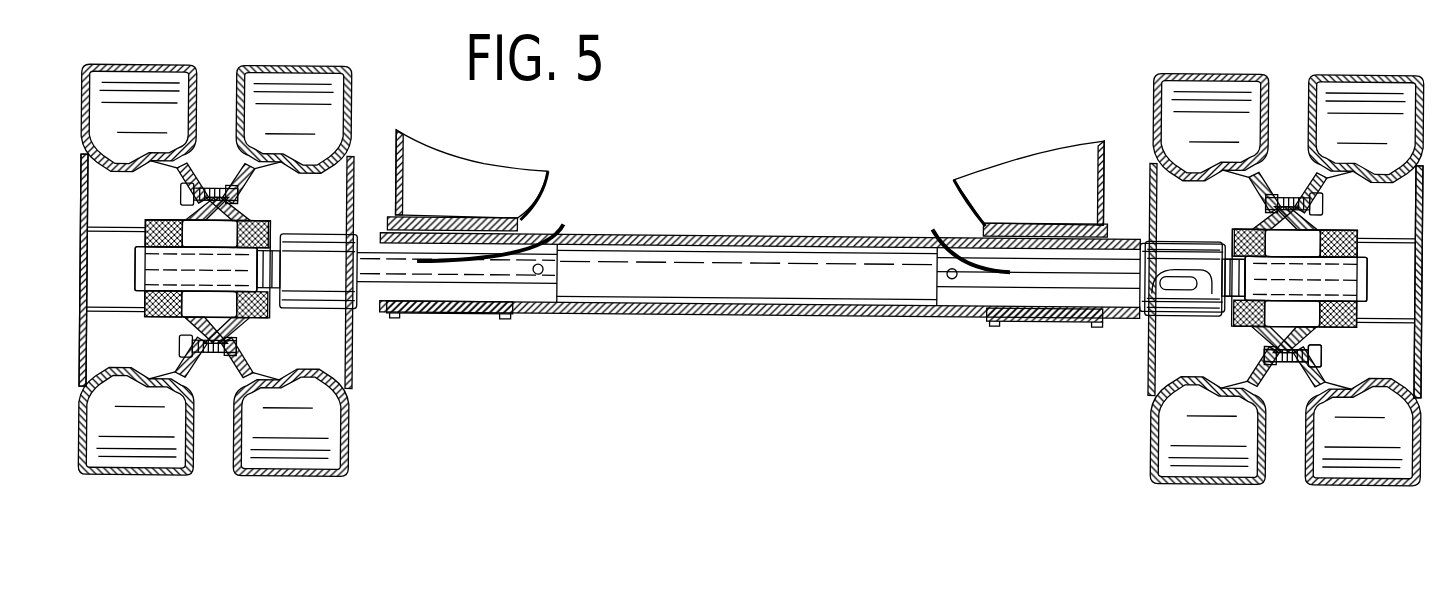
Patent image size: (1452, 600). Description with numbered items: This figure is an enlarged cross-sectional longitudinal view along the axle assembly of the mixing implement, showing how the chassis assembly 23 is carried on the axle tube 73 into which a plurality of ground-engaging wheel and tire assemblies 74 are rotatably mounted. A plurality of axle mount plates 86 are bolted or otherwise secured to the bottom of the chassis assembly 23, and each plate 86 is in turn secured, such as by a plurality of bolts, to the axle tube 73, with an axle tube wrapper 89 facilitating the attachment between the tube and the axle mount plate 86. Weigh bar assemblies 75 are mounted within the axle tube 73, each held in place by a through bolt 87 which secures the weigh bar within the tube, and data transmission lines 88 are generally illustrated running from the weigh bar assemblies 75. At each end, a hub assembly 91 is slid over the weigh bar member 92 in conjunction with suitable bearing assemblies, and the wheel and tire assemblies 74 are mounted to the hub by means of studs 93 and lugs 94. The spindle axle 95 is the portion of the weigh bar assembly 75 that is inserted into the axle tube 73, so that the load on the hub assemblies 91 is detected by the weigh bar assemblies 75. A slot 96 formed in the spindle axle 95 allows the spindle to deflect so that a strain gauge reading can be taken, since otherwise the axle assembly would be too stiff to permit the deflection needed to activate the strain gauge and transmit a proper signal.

The chassis assembly 23 is at (545, 184).
The axle tube 73 is at (752, 306).
The wheel and tire assemblies 74 is at (340, 432).
The weigh bar assemblies 75 is at (355, 222).
The axle mount plates 86 is at (540, 223).
The through bolt 87 is at (538, 277).
The data transmission lines 88 is at (570, 226).
The axle tube wrapper 89 is at (445, 311).
The hub assembly 91 is at (186, 220).
The weigh bar member 92 is at (140, 268).
The studs 93 is at (1265, 353).
The lugs 94 is at (1320, 356).
The spindle axle 95 is at (372, 295).
The slot 96 is at (1175, 288).